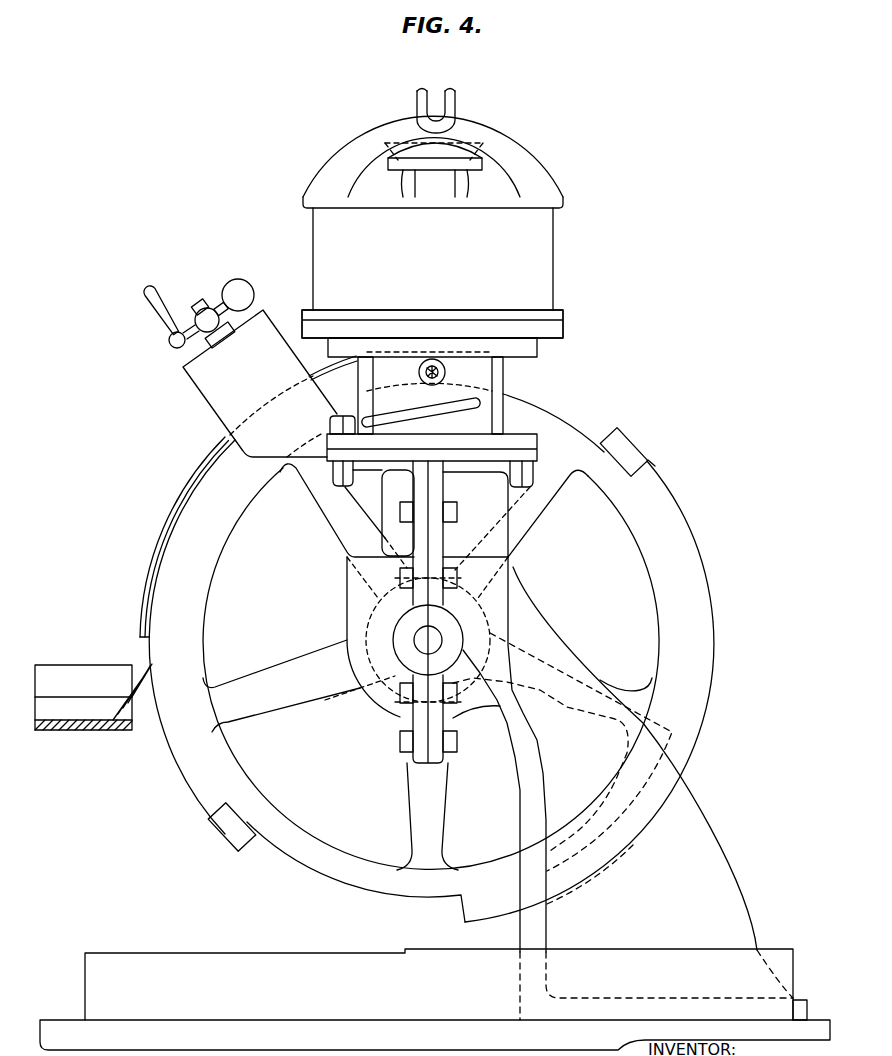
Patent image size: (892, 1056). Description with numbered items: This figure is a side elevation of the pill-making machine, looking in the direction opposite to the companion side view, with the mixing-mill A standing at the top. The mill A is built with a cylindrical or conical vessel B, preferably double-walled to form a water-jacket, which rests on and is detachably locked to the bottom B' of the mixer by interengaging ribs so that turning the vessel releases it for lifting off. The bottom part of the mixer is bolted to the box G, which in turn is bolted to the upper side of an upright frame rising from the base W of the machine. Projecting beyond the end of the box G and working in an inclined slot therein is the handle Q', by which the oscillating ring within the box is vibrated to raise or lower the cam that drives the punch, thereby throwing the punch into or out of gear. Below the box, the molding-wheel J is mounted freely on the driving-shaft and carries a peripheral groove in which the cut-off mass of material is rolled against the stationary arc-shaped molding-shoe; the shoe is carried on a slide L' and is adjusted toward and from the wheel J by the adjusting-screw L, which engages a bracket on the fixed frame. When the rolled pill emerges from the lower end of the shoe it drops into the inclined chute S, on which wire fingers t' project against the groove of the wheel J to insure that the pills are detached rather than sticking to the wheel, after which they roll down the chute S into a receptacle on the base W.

The mixing-mill A is at (432, 214).
The vessel B is at (442, 319).
The bottom of the mixer B' is at (451, 356).
The box G is at (503, 383).
The adjusting-screw L is at (199, 313).
The slide L' is at (256, 383).
The handle Q' is at (421, 405).
The molding-wheel J is at (431, 652).
The inclined chute S is at (62, 689).
The fingers t' is at (132, 695).
The base W is at (332, 1030).